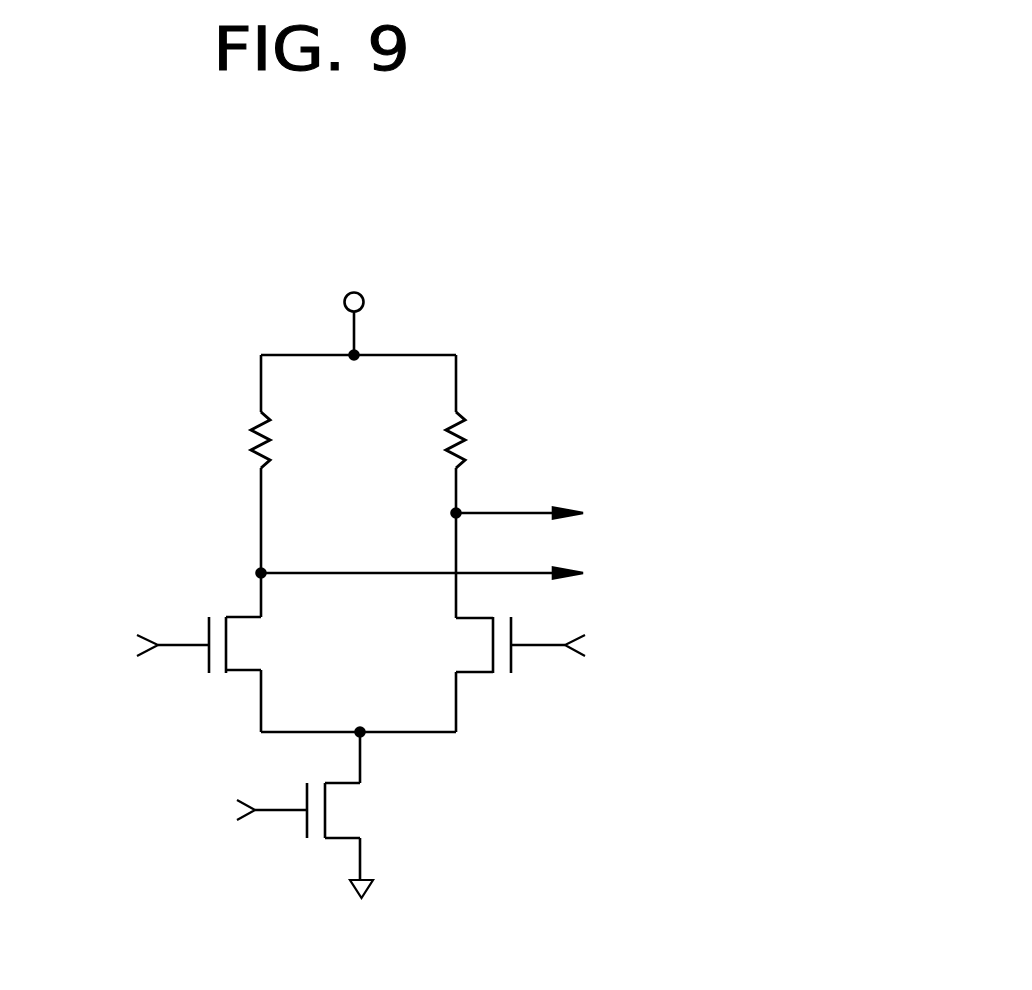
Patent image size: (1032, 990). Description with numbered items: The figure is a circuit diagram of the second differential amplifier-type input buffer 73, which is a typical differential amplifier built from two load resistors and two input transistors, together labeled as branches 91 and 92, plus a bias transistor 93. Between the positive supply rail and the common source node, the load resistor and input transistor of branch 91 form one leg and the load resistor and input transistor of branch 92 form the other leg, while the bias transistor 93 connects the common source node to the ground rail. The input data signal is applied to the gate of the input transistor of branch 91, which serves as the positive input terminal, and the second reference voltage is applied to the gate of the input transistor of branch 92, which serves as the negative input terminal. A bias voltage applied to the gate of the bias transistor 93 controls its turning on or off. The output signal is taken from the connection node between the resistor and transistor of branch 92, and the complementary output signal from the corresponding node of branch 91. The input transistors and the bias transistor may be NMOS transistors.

The second differential amplifier-type input buffer 73 is at (722, 302).
The load resistor R91 and input transistor N91 91 is at (227, 543).
The load resistor R92 and input transistor N92 92 is at (491, 543).
The bias transistor N93 93 is at (332, 806).